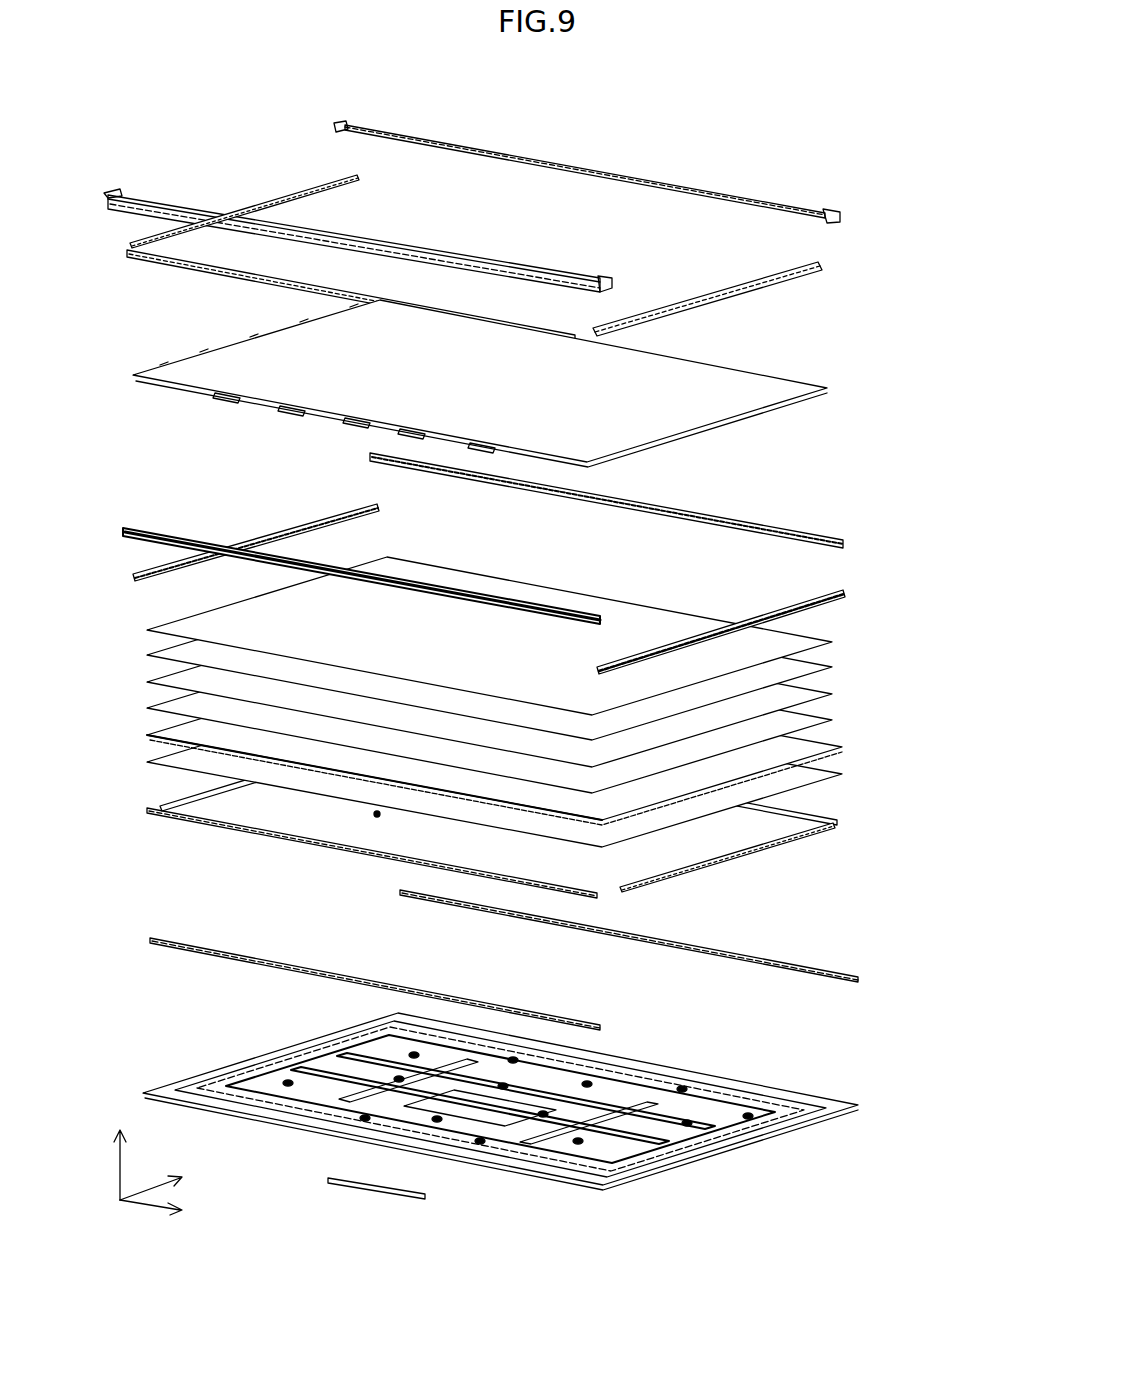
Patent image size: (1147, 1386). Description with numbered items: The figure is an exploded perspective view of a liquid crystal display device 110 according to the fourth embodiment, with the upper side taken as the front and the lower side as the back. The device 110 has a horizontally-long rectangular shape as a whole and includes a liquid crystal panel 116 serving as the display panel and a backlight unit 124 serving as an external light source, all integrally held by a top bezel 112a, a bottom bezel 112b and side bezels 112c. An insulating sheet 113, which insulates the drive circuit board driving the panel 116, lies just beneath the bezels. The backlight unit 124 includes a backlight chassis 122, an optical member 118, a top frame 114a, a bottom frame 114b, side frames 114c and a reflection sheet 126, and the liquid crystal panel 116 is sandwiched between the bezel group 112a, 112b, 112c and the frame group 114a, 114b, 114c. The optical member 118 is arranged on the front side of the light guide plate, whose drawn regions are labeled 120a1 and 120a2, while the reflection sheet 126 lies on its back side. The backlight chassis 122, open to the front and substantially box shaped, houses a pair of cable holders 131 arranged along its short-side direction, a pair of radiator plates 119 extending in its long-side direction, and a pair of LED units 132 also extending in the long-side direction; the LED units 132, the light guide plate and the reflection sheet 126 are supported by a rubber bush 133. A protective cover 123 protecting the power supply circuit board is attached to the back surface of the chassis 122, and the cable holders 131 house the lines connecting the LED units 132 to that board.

The liquid crystal display device 110 is at (770, 146).
The top bezel 112a is at (597, 172).
The bottom bezel 112b is at (126, 212).
The side bezel 112c is at (300, 190).
The insulating sheet 113 is at (196, 268).
The liquid crystal panel 116 is at (752, 380).
The top frame 114a is at (810, 547).
The bottom frame 114b is at (252, 560).
The side frame 114c is at (285, 533).
The optical member 118 is at (842, 638).
The chassis plate front portion 120a1 is at (412, 785).
The chassis plate rear portion 120a2 is at (826, 745).
The reflection sheet 126 is at (826, 770).
The cable holder 131 is at (183, 797).
The LED unit 132 is at (808, 812).
The rubber bush 133 is at (374, 815).
The radiator plate 119 is at (590, 1018).
The backlight chassis 122 is at (270, 1128).
The protective cover 123 is at (342, 1188).
The backlight unit 124 is at (500, 1120).